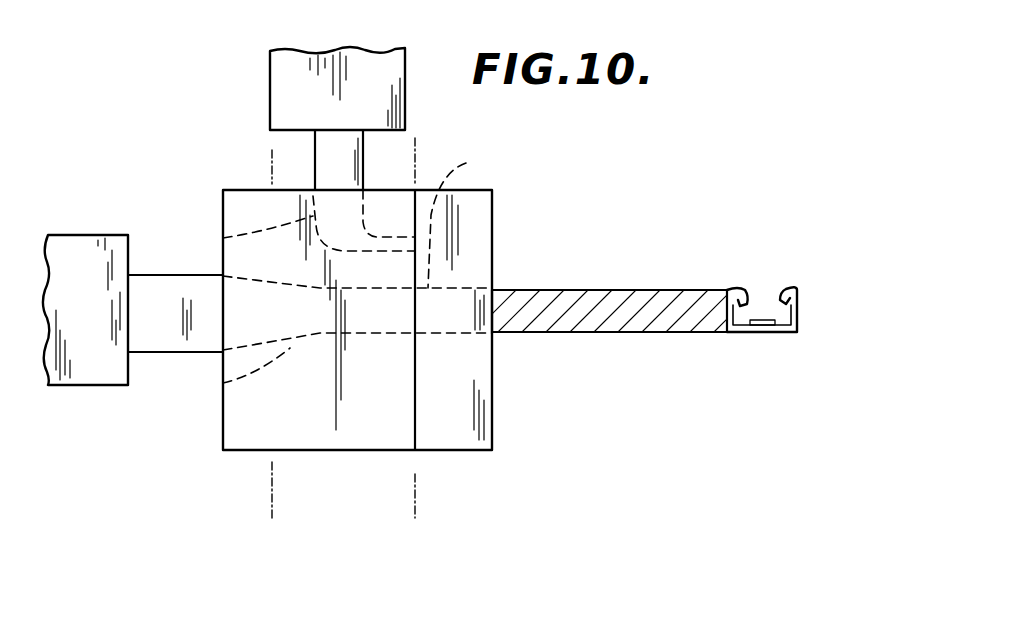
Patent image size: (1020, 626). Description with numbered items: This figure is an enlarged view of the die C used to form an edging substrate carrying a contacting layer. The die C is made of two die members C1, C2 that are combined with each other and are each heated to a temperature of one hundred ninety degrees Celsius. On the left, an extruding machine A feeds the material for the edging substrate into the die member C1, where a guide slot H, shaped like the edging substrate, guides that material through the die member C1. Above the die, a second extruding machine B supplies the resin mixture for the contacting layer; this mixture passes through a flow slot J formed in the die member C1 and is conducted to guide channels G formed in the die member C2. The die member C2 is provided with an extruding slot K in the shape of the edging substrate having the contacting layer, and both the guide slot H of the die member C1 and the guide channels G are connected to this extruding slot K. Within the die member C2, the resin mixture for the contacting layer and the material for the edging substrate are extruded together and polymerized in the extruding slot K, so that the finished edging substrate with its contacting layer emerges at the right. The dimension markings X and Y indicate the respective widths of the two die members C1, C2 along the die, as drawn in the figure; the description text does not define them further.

The extruding machine A is at (58, 247).
The extruding machine B is at (283, 87).
The die C is at (497, 223).
The die member C1 is at (238, 431).
The die member C2 is at (455, 443).
The guide channels G is at (457, 220).
The guide slot H is at (223, 383).
The flow slot J is at (223, 238).
The extruding slot K is at (437, 288).
The dimension X is at (270, 168).
The dimension Y is at (413, 168).